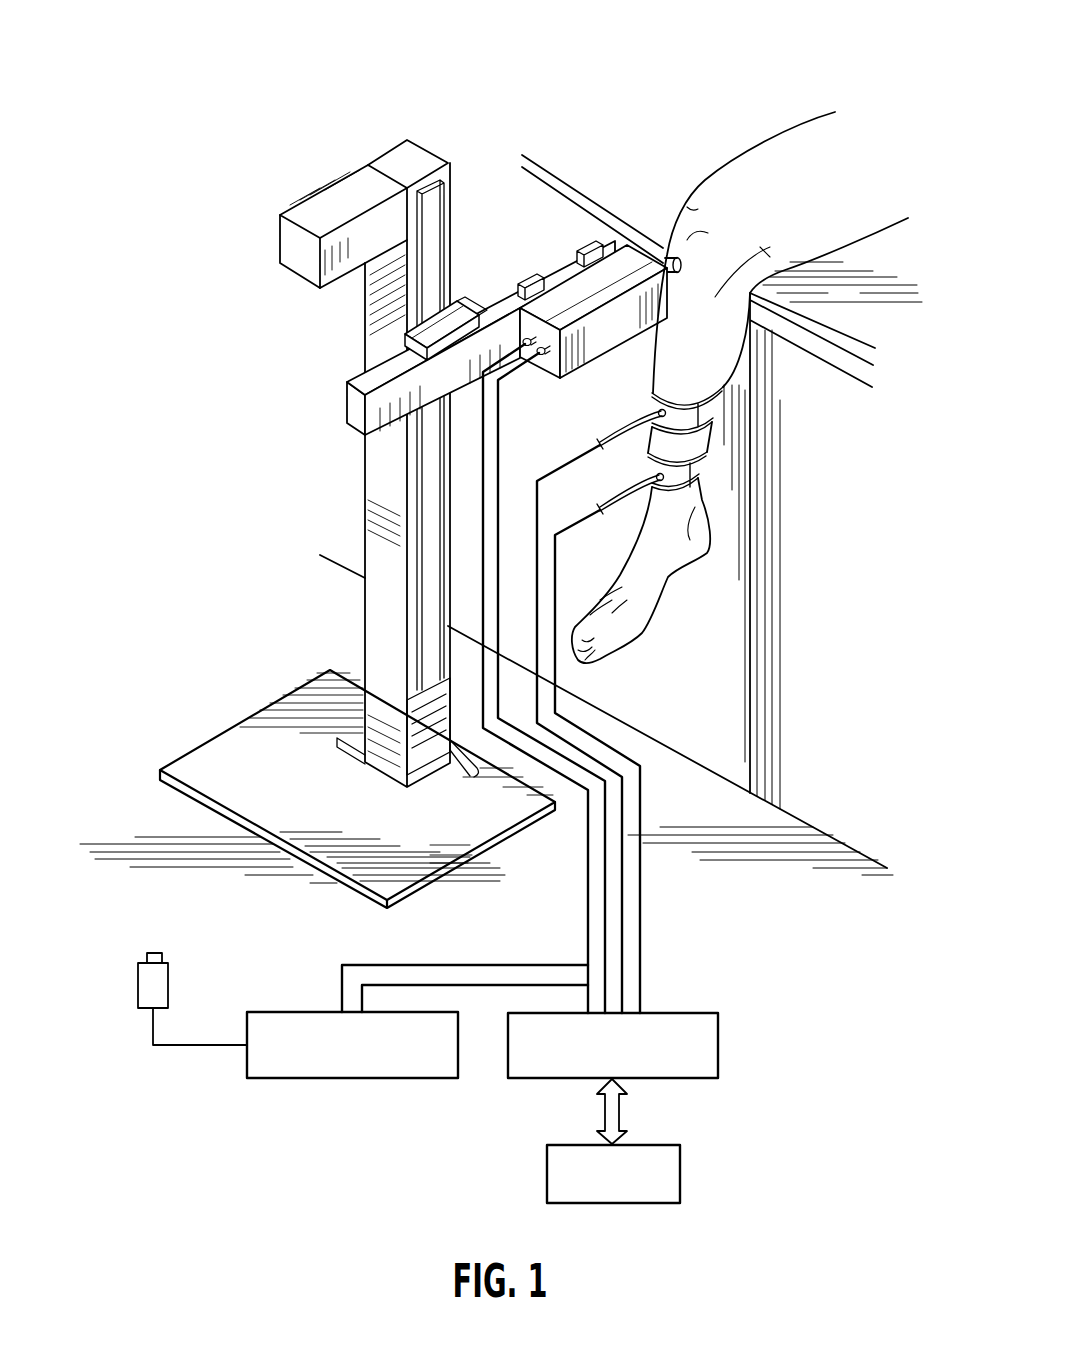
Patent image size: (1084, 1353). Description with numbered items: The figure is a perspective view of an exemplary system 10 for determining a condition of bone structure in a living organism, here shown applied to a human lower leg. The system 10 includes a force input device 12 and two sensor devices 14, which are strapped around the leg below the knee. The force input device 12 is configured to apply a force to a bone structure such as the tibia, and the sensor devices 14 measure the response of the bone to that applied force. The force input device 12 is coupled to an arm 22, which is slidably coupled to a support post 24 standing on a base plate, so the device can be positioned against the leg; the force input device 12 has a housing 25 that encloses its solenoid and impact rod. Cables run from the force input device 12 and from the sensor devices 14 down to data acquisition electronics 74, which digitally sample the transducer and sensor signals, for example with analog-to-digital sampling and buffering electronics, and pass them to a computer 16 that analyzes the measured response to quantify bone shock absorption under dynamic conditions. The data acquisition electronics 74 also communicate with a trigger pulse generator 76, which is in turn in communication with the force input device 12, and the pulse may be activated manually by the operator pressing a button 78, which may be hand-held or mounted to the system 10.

The system 10 is at (264, 49).
The force input device 12 is at (627, 243).
The sensor devices 14 is at (696, 472).
The computer 16 is at (658, 1143).
The arm 22 is at (497, 306).
The support post 24 is at (372, 473).
The housing 25 is at (608, 347).
The data acquisition electronics 74 is at (683, 1013).
The trigger pulse generator 76 is at (316, 1080).
The button 78 is at (173, 983).